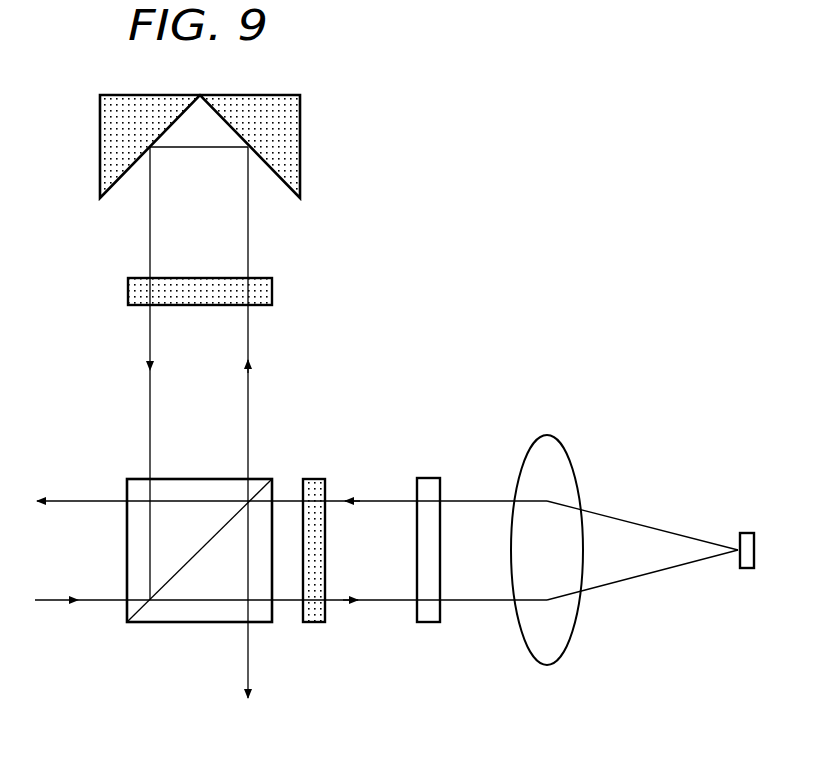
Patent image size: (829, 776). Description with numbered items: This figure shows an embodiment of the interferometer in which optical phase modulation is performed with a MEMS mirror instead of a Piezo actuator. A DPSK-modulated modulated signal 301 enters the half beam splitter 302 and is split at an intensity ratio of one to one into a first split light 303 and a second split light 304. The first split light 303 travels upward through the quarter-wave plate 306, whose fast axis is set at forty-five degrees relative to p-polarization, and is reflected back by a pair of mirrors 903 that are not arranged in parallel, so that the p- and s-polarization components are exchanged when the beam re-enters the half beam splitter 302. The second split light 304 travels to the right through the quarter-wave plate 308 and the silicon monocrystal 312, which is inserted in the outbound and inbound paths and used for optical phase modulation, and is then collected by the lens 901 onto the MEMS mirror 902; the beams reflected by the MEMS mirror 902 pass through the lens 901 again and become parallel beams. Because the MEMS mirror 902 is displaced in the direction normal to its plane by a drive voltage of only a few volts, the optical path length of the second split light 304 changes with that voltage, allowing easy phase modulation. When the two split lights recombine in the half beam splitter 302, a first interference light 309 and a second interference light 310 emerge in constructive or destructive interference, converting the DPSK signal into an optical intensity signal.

The pair of mirrors 903 is at (300, 143).
The quarter-wave plate 306 is at (272, 288).
The first split light 303 is at (150, 330).
The second interference light 310 is at (248, 637).
The first interference light 309 is at (84, 499).
The modulated signal 301 is at (97, 598).
The half beam splitter 302 is at (153, 613).
The quarter-wave plate 308 is at (318, 478).
The second split light 304 is at (290, 600).
The silicon monocrystal 312 is at (425, 622).
The lens 901 is at (547, 435).
The MEMS mirror 902 is at (747, 533).